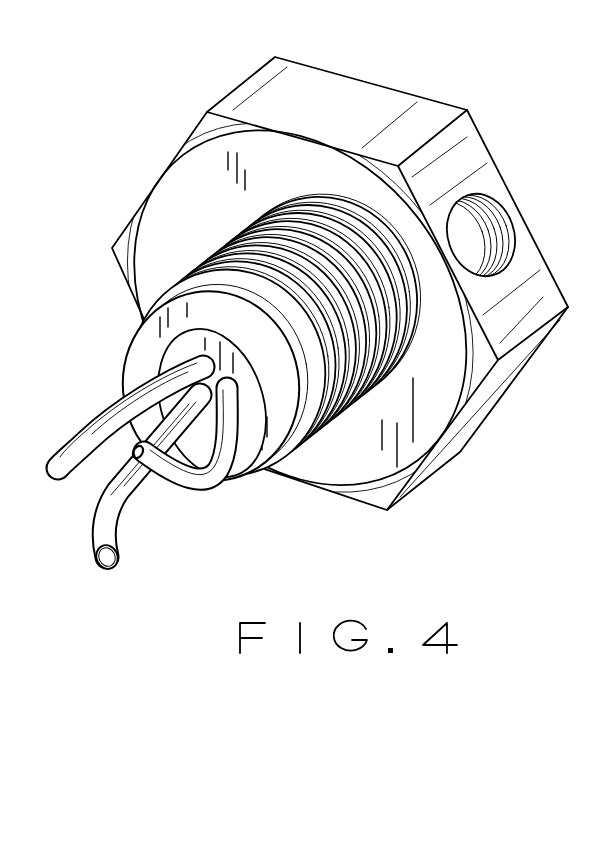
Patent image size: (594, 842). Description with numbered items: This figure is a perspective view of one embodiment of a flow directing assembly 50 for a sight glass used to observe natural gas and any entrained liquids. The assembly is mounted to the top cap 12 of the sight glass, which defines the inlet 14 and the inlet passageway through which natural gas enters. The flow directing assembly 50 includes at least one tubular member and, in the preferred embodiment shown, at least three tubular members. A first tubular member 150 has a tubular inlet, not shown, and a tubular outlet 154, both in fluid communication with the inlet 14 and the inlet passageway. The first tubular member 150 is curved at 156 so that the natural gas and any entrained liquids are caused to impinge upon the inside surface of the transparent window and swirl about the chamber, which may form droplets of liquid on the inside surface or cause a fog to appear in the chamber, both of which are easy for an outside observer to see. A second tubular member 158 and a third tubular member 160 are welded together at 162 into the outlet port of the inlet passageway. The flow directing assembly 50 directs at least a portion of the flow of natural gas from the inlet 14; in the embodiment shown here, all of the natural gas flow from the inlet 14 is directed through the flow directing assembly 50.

The top cap 12 is at (375, 85).
The inlet 14 is at (483, 228).
The flow directing assembly 50 is at (88, 370).
The first tubular member 150 is at (127, 510).
The tubular outlet 154 is at (120, 560).
The curve 156 is at (97, 517).
The second tubular member 158 is at (213, 483).
The third tubular member 160 is at (82, 420).
The weld 162 is at (236, 378).